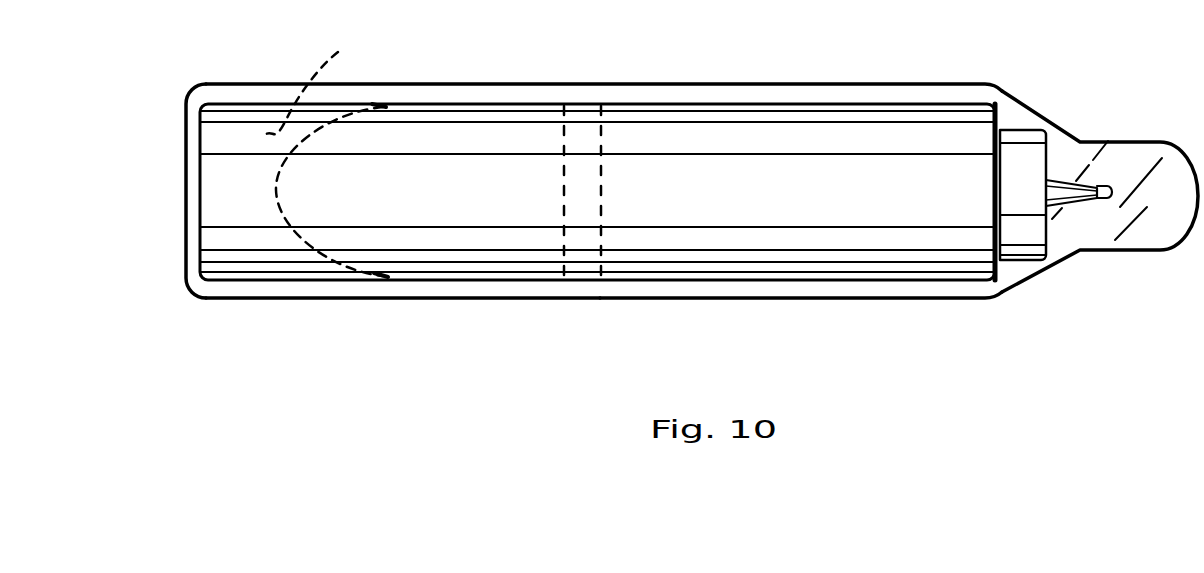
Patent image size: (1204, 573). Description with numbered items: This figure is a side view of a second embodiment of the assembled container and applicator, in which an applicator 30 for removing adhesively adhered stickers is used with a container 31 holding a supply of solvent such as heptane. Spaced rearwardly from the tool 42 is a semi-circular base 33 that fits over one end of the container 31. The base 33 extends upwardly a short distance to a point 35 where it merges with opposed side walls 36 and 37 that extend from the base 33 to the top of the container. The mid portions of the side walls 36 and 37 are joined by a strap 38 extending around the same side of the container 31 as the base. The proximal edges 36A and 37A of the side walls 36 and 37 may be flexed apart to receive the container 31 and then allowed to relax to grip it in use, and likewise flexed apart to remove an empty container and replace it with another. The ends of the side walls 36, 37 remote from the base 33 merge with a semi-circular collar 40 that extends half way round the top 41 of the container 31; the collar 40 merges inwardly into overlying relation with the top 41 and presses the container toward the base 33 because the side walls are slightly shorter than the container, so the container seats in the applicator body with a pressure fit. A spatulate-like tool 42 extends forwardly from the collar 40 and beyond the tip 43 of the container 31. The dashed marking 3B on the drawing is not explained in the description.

The applicator 30 is at (828, 69).
The container 31 is at (897, 133).
The semi-circular base 33 is at (185, 173).
The point 35 is at (290, 164).
The side wall 36 is at (720, 92).
The proximal edge 36A is at (553, 98).
The side wall 37 is at (768, 292).
The proximal edge 37A is at (483, 290).
The strap 38 is at (603, 196).
The semi-circular collar 40 is at (1023, 112).
The top 41 is at (1025, 113).
The spatulate-like tool 42 is at (1170, 223).
The tip 43 is at (1118, 189).
The section line 3B is at (352, 50).